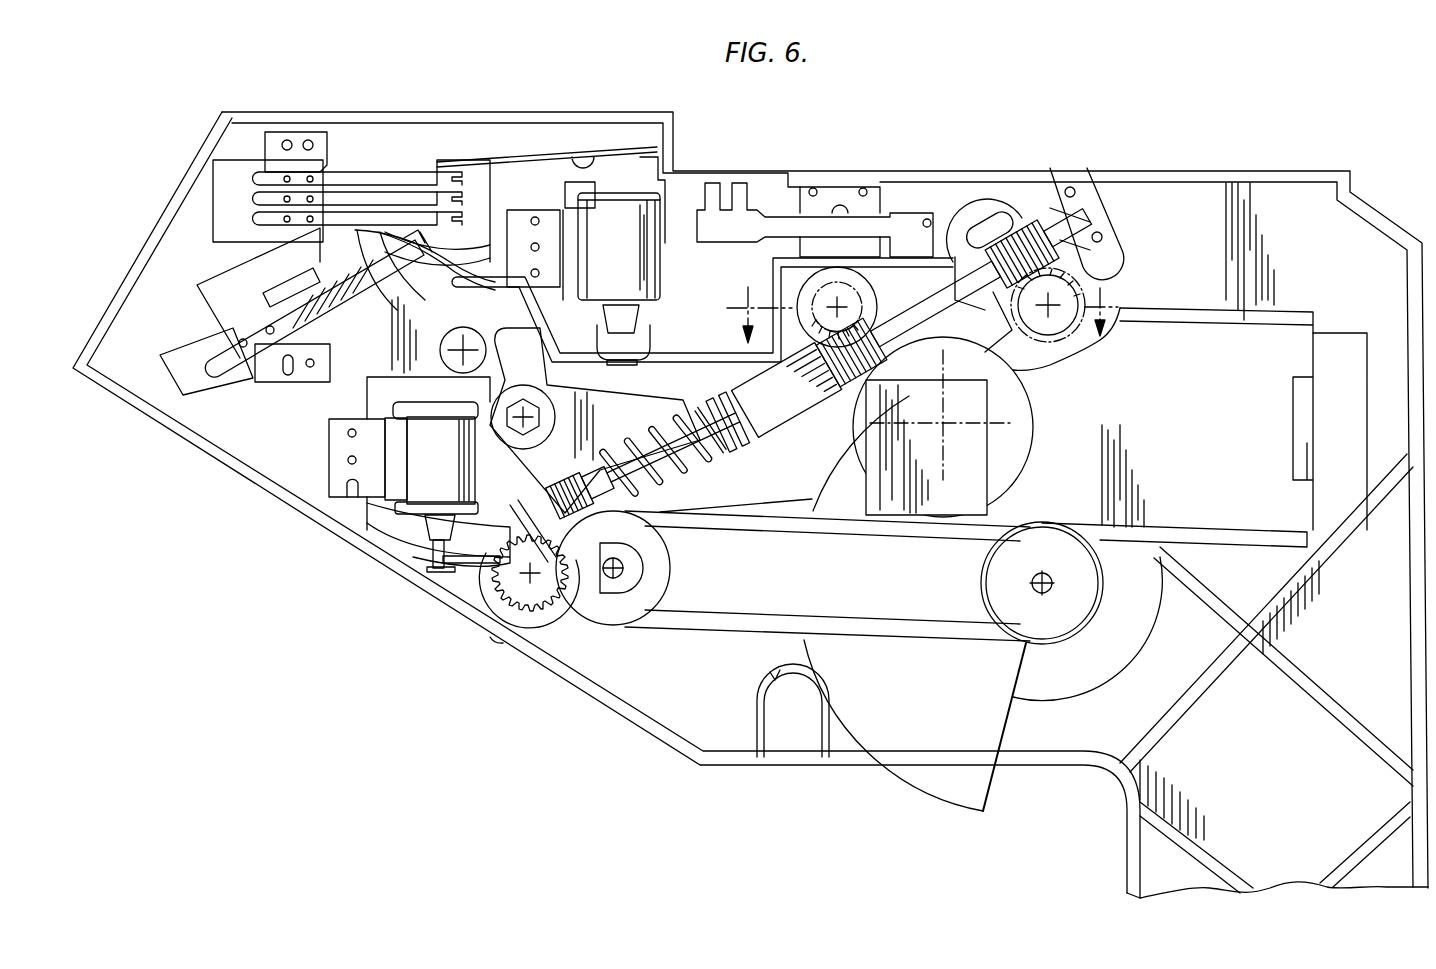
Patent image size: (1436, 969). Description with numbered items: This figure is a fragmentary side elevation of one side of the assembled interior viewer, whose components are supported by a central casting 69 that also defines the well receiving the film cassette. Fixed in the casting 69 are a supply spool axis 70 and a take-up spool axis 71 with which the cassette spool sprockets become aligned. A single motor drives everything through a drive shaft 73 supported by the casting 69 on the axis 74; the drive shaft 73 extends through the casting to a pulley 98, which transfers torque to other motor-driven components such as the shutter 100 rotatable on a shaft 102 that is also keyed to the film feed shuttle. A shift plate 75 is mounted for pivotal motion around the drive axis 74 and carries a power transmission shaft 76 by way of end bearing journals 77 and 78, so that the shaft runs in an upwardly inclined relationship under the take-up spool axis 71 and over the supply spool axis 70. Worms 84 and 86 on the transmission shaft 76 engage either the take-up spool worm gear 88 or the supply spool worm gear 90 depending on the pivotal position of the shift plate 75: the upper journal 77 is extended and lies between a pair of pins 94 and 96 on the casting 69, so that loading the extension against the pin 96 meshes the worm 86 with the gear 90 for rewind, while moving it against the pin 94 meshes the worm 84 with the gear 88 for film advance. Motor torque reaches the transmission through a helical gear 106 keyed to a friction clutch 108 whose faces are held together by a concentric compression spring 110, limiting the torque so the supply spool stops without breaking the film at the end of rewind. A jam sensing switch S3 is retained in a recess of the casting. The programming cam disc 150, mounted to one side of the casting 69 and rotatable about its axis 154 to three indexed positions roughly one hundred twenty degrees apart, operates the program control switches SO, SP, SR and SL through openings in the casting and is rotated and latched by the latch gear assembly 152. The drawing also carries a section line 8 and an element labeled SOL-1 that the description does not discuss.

The central casting 69 is at (1182, 200).
The supply spool axis 70 is at (1046, 310).
The take-up spool axis 71 is at (840, 306).
The drive shaft 73 is at (624, 572).
The drive axis 74 is at (622, 562).
The shift plate 75 is at (740, 392).
The power transmission shaft 76 is at (946, 300).
The upper end bearing journal 77 is at (1053, 207).
The end bearing journal 78 is at (493, 588).
The worm 84 is at (828, 368).
The worm 86 is at (1031, 232).
The take-up spool worm gear 88 is at (856, 314).
The supply spool worm gear 90 is at (1066, 296).
The pin 94 is at (1074, 187).
The pin 96 is at (1101, 233).
The pulley 98 is at (614, 612).
The shutter 100 is at (960, 733).
The shaft 102 is at (1042, 573).
The helical gear 106 is at (560, 472).
The clutch 108 is at (592, 462).
The compression spring 110 is at (684, 474).
The programming cam disc 150 is at (467, 238).
The latch gear assembly 152 is at (497, 630).
The axis 154 is at (466, 336).
The section line 8- 8 is at (919, 317).
The jam sensing switch S3 is at (827, 200).
The program control switch SO is at (443, 163).
The program control switch SP is at (450, 200).
The program control switch SR is at (450, 218).
The program control switch SL is at (360, 277).
The solenoid SOL-1 is at (414, 474).